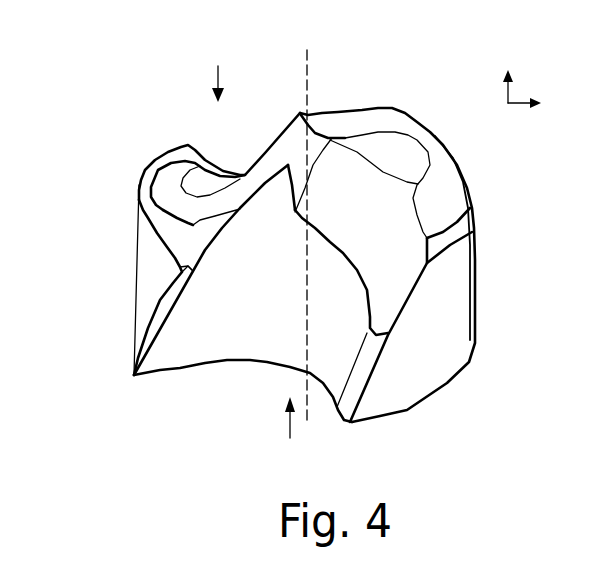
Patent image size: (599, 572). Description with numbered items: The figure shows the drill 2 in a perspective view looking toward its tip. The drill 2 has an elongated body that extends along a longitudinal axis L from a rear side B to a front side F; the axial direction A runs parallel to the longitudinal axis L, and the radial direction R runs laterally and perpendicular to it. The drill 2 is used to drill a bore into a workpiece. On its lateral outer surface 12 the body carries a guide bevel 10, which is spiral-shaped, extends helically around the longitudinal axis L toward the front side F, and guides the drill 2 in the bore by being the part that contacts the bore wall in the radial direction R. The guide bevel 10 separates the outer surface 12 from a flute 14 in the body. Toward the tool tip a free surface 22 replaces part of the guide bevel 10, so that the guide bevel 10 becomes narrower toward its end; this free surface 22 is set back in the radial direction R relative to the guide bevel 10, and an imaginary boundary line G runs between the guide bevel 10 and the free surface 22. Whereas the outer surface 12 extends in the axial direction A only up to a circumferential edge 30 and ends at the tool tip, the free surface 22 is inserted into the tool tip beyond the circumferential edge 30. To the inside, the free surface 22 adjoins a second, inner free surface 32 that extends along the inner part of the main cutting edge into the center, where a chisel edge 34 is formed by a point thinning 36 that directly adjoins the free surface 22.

The drill 2 is at (273, 223).
The guide bevel 10 is at (137, 348).
The lateral outer surface 12 is at (150, 265).
The flute 14 is at (253, 343).
The free surface 22 is at (193, 234).
The circumferential edge 30 is at (457, 236).
The second free surface 32 is at (188, 153).
The chisel edge 34 is at (303, 117).
The point thinning 36 is at (400, 288).
The front side F is at (220, 68).
The rear side B is at (291, 432).
The axial direction A is at (507, 98).
The radial direction R is at (518, 103).
The longitudinal axis L is at (308, 70).
The imaginary boundary line G is at (186, 272).